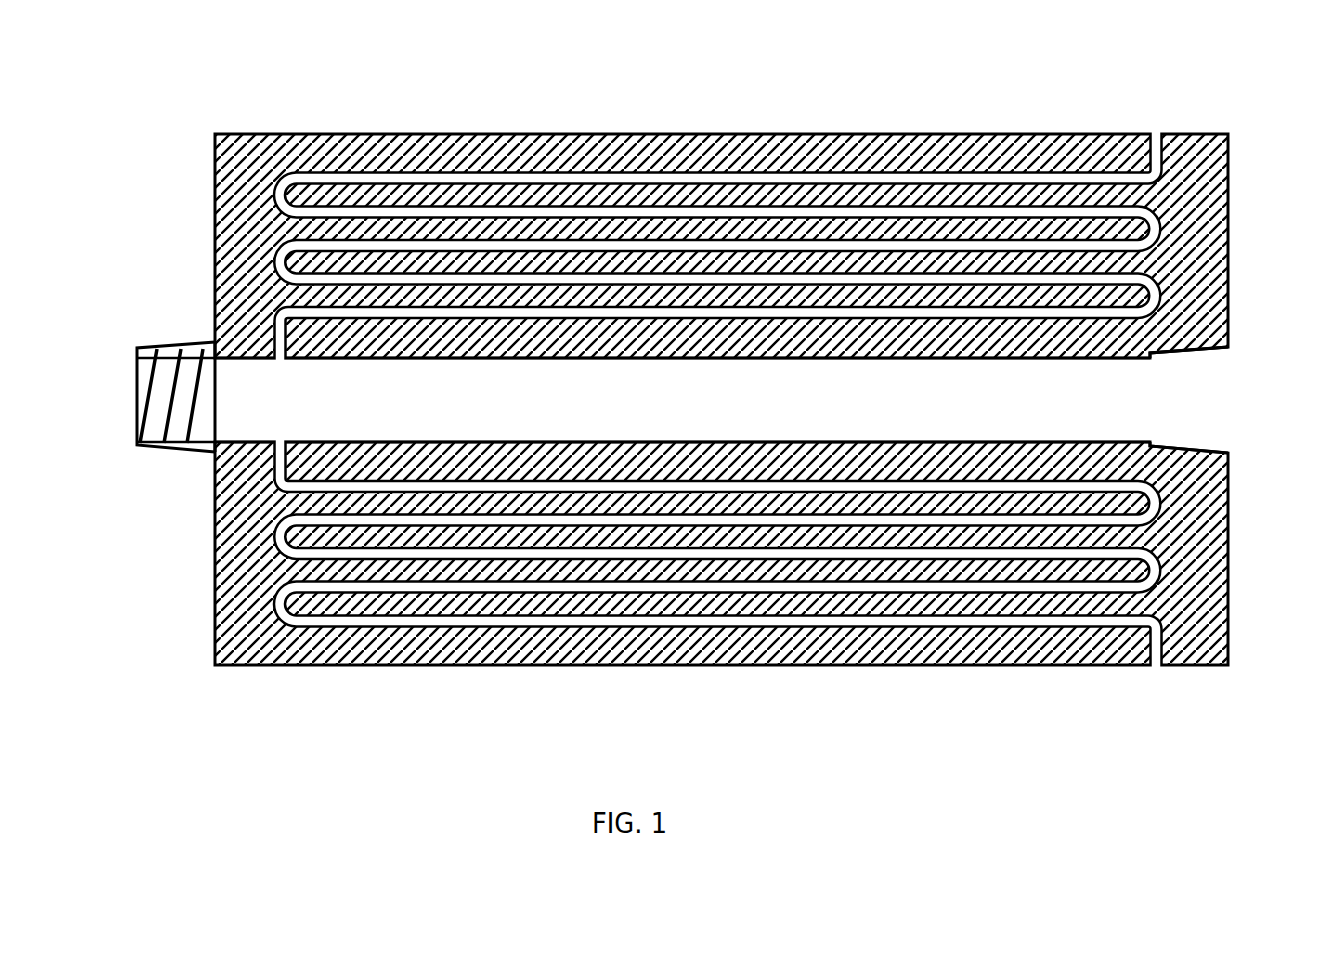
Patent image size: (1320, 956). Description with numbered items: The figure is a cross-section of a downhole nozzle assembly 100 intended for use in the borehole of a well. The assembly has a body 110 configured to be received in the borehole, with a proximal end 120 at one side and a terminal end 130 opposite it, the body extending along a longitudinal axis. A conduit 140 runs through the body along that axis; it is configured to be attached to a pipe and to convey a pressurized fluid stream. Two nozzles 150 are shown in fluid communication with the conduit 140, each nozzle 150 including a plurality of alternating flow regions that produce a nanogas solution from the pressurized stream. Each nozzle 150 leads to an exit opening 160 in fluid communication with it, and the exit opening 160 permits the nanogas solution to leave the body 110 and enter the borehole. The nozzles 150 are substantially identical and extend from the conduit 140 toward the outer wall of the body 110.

The downhole nozzle assembly 100 is at (721, 369).
The body 110 is at (283, 118).
The proximal end 120 is at (150, 397).
The terminal end 130 is at (1215, 400).
The conduit 140 is at (643, 400).
The nozzle 150 is at (990, 167).
The exit opening 160 is at (1153, 128).